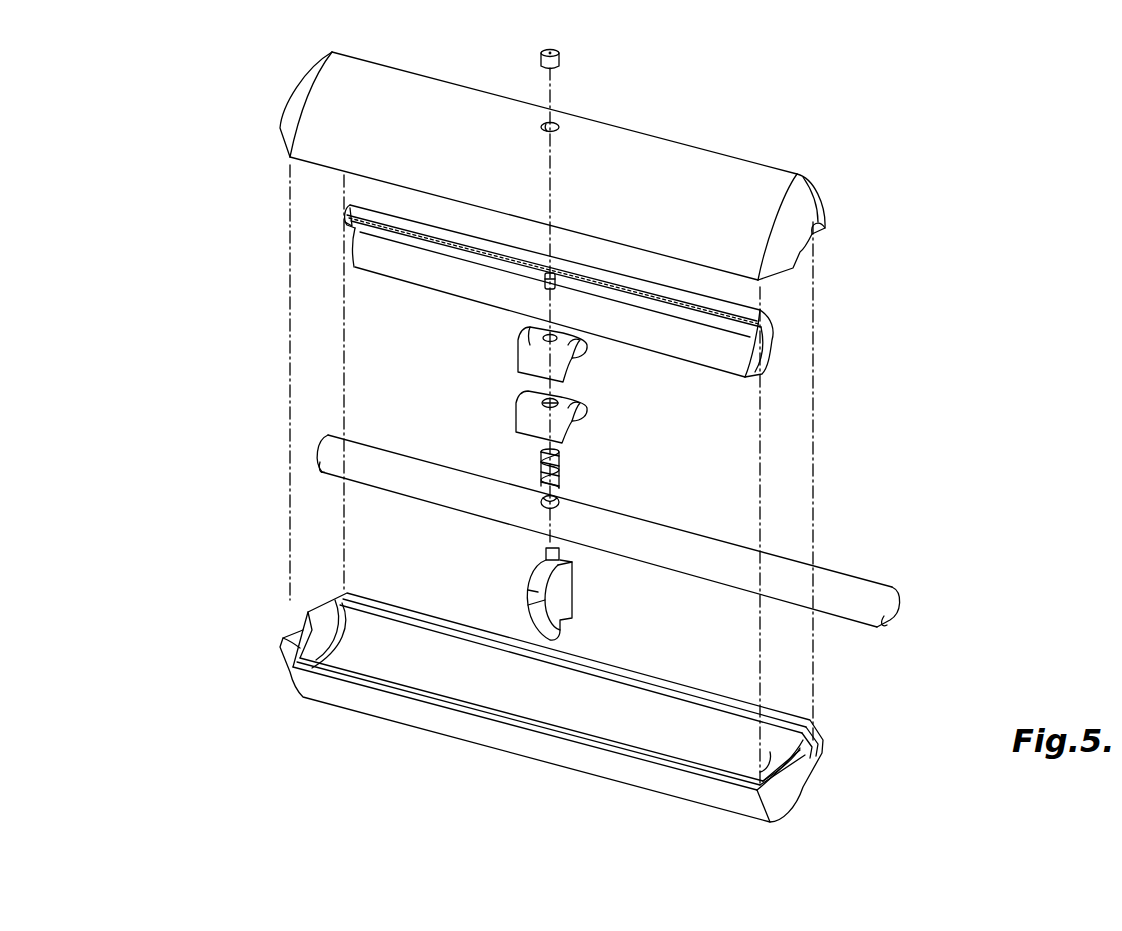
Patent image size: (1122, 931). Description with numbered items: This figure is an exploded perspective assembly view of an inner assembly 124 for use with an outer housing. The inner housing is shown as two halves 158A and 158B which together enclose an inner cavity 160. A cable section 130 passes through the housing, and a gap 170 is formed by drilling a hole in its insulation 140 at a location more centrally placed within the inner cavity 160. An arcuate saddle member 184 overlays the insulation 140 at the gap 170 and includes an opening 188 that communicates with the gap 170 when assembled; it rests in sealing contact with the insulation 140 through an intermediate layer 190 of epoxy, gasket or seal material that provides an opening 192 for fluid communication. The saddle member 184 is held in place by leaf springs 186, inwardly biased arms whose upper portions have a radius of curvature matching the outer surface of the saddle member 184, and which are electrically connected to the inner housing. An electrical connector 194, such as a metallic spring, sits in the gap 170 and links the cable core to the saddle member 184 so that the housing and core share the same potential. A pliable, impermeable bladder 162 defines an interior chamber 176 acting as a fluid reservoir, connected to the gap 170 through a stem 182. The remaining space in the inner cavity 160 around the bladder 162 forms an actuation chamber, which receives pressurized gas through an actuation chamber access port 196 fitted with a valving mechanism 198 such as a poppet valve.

The inner assembly 124 is at (908, 226).
The cable section 130 is at (866, 575).
The insulation 140 is at (630, 520).
The inner housing half 158A is at (286, 99).
The inner housing half 158B is at (345, 712).
The inner cavity 160 is at (500, 692).
The bladder 162 is at (772, 330).
The gap 170 is at (546, 498).
The interior chamber 176 is at (347, 223).
The stem 182 is at (544, 283).
The saddle member 184 is at (570, 361).
The leaf springs 186 is at (576, 615).
The opening 188 is at (541, 339).
The intermediate layer 190 is at (568, 420).
The opening 192 is at (544, 403).
The electrical connector 194 is at (560, 468).
The actuation chamber access port 196 is at (556, 124).
The valving mechanism 198 is at (540, 57).